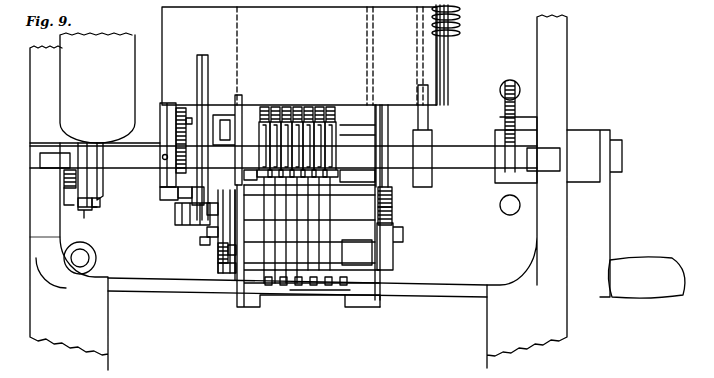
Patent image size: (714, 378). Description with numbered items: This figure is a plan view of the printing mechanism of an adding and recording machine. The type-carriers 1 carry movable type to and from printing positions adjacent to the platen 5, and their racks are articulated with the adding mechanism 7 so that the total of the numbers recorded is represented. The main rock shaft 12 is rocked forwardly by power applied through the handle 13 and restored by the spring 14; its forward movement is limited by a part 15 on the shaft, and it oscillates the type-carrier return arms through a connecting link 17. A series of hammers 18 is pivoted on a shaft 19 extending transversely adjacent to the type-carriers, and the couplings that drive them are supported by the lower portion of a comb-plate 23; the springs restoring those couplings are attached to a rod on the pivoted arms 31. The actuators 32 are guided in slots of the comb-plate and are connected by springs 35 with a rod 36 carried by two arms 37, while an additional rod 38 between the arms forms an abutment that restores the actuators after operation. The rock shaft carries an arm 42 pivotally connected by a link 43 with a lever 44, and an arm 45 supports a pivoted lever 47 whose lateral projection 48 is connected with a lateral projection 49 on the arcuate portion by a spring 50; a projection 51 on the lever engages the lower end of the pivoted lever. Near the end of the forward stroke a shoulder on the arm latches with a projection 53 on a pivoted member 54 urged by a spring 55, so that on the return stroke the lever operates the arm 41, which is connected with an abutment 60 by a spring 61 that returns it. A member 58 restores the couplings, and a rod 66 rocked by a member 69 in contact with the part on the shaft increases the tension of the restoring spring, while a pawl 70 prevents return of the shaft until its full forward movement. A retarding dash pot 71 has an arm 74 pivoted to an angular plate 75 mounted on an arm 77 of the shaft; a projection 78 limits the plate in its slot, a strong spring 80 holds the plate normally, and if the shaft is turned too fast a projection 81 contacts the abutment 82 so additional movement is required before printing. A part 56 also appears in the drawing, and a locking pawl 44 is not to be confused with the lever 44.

The type-carrier 1 is at (340, 132).
The platen 5 is at (299, 56).
The adding mechanism 7 is at (322, 105).
The rock shaft 12 is at (160, 135).
The handle 13 is at (626, 214).
The spring 14 is at (460, 31).
The part 15 is at (388, 115).
The connecting link 17 is at (413, 135).
The hammer 18 is at (330, 200).
The shaft 19 is at (357, 177).
The comb-plate 23 is at (252, 297).
The pivoted arm 31 is at (218, 238).
The actuator arm 32 is at (297, 283).
The spring 35 is at (247, 177).
The rod 36 is at (352, 297).
The arm 37 is at (237, 280).
The rod 38 is at (340, 245).
The arm 41 is at (228, 250).
The arm 42 is at (160, 192).
The link 43 is at (176, 112).
The lever 44 is at (186, 121).
The arm 45 is at (192, 196).
The lever 47 is at (178, 192).
The lateral projection 48 is at (204, 105).
The lateral projection 49 is at (207, 210).
The spring 50 is at (175, 215).
The projection 51 is at (392, 196).
The projection 53 is at (207, 232).
The pivoted member 54 is at (240, 105).
The spring 55 is at (218, 250).
The pin 56 is at (200, 241).
The member 58 is at (320, 291).
The abutment 60 is at (235, 260).
The spring 61 is at (218, 268).
The rod 66 is at (403, 236).
The member 69 is at (392, 214).
The pawl 70 is at (495, 135).
The dash pot 71 is at (97, 88).
The arm 74 is at (97, 145).
The angular plate 75 is at (66, 205).
The arm 77 is at (96, 207).
The projection 78 is at (58, 236).
The spring 80 is at (64, 186).
The projection 81 is at (84, 212).
The abutment 82 is at (86, 254).